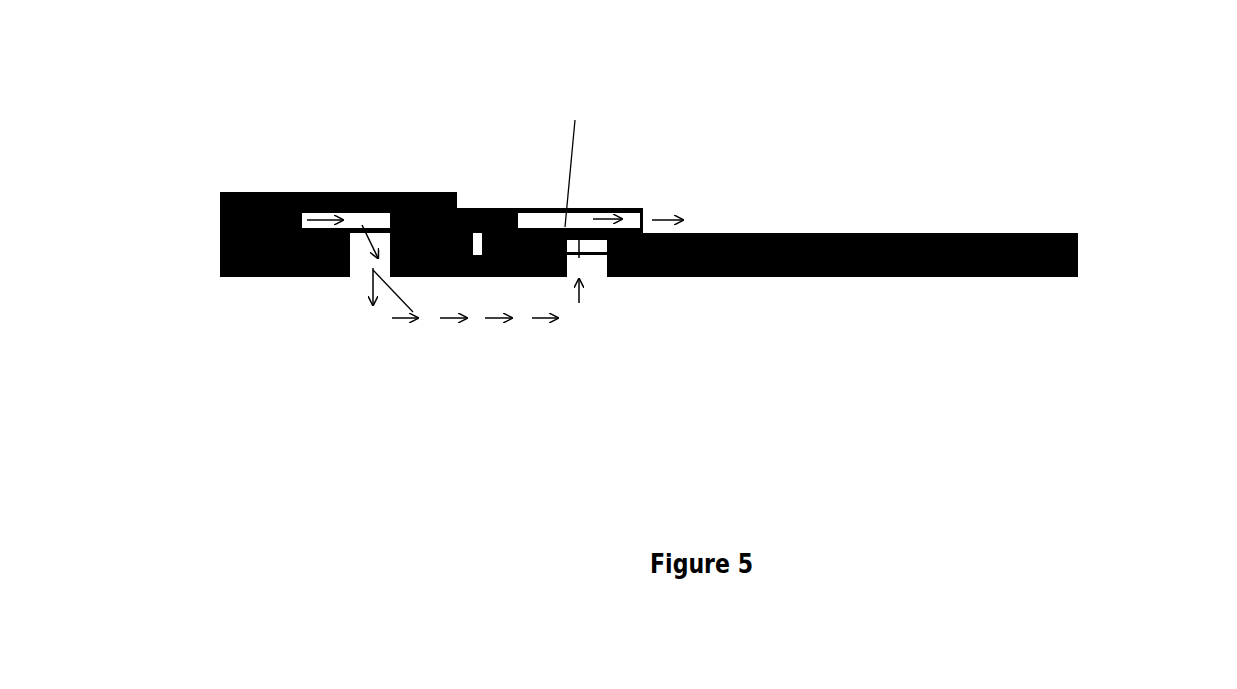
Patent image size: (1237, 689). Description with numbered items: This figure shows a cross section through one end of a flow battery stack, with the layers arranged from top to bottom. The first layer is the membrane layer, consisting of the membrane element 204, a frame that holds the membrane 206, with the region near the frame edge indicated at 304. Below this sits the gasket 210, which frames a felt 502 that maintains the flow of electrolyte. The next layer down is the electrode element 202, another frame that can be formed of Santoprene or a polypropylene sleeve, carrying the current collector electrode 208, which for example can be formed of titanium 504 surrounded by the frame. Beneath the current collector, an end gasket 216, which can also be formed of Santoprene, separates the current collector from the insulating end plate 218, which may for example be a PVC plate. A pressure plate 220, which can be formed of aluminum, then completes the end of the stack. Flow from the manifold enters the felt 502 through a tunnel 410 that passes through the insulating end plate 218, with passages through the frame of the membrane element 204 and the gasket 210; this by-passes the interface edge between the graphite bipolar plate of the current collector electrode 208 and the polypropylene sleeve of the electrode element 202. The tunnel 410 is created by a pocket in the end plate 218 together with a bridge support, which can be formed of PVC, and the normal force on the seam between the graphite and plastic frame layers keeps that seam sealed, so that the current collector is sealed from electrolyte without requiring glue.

The electrode element 202 is at (218, 243).
The membrane element 204 is at (375, 192).
The membrane 206 is at (957, 202).
The current collector electrode 208 is at (1078, 247).
The gasket 210 is at (218, 208).
The end gasket 216 is at (218, 268).
The insulating end plate 218 is at (247, 303).
The pressure plate 220 is at (308, 442).
The top electrode portion 304 is at (307, 193).
The tunnel 410 is at (602, 303).
The felt 502 is at (1053, 220).
The titanium 504 is at (477, 233).